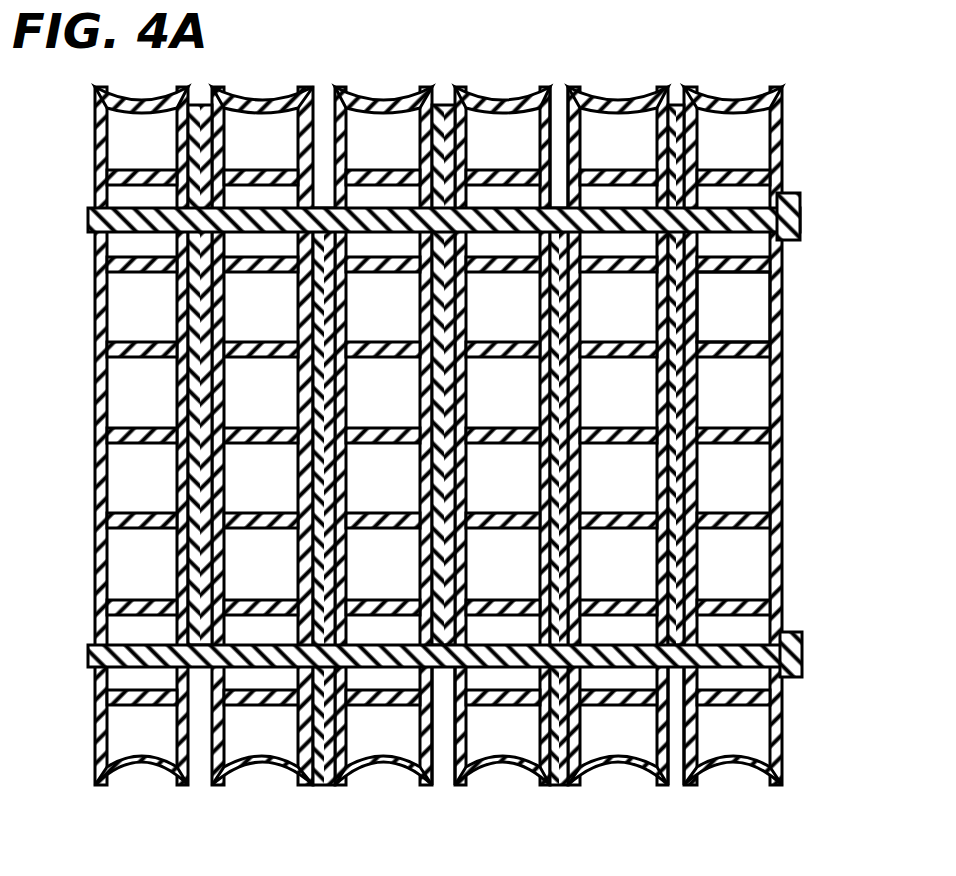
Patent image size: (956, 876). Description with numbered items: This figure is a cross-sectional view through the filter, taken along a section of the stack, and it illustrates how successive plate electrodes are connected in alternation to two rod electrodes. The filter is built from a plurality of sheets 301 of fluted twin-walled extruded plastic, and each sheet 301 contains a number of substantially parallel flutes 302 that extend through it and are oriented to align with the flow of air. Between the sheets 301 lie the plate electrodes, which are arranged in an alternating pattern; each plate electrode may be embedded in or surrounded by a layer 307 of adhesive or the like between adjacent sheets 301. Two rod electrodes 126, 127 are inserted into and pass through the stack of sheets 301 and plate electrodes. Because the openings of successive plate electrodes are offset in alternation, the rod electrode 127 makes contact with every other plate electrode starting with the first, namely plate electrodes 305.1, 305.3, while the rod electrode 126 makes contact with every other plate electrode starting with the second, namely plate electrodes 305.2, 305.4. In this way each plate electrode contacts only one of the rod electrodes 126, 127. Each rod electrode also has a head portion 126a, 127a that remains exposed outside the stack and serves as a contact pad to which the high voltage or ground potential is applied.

The sheet 301 is at (613, 86).
The flute 302 is at (755, 313).
The plate electrode 305.1 is at (679, 102).
The plate electrode 305.2 is at (553, 776).
The plate electrode 305.3 is at (451, 102).
The plate electrode 305.4 is at (216, 490).
The layer of adhesive 307 is at (560, 92).
The rod electrode 126 is at (88, 658).
The head portion 126a is at (802, 650).
The rod electrode 127 is at (88, 220).
The head portion 127a is at (800, 212).